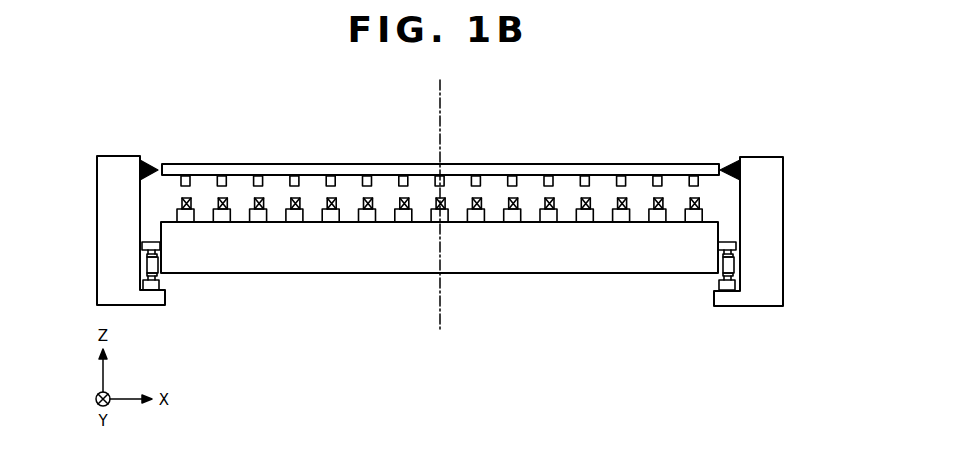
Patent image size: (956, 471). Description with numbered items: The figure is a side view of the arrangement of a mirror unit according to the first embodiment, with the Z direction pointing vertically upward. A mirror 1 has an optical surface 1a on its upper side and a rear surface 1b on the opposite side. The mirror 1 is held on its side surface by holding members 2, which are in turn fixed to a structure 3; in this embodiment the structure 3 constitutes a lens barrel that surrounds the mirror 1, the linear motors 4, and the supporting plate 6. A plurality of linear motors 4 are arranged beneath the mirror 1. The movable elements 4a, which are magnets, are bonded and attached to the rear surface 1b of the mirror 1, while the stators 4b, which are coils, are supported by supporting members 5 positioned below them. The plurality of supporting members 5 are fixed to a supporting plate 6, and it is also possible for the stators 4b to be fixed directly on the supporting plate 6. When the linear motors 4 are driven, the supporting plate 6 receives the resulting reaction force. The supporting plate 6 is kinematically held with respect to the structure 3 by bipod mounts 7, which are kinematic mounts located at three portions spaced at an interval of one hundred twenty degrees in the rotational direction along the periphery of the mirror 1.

The mirror 1 is at (368, 166).
The optical surface 1a is at (457, 164).
The rear surface 1b is at (527, 175).
The holding member 2 is at (735, 160).
The structure 3 is at (770, 185).
The linear motor 4 is at (426, 137).
The movable element (magnet) 4a is at (186, 178).
The stator (coil) 4b is at (188, 199).
The supporting member 5 is at (291, 223).
The supporting plate 6 is at (464, 249).
The bipod mount 7 is at (716, 273).